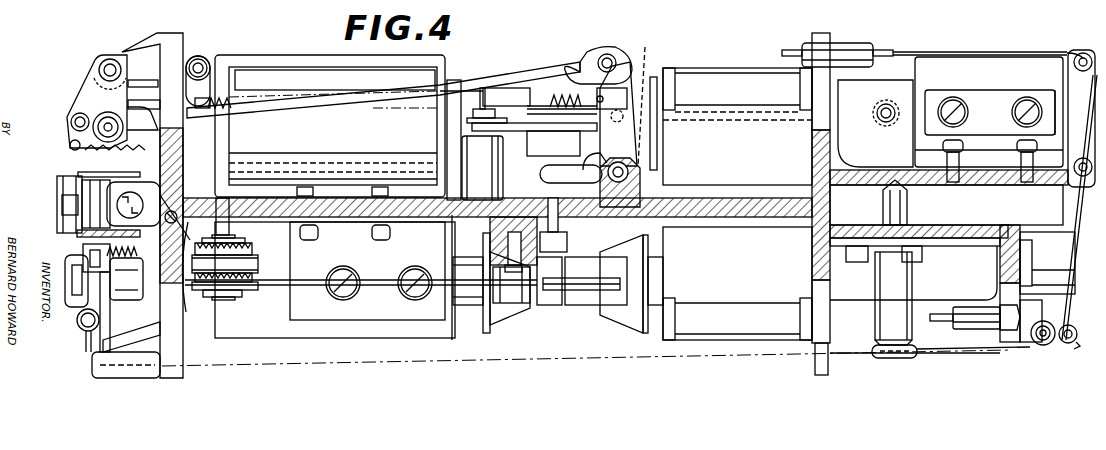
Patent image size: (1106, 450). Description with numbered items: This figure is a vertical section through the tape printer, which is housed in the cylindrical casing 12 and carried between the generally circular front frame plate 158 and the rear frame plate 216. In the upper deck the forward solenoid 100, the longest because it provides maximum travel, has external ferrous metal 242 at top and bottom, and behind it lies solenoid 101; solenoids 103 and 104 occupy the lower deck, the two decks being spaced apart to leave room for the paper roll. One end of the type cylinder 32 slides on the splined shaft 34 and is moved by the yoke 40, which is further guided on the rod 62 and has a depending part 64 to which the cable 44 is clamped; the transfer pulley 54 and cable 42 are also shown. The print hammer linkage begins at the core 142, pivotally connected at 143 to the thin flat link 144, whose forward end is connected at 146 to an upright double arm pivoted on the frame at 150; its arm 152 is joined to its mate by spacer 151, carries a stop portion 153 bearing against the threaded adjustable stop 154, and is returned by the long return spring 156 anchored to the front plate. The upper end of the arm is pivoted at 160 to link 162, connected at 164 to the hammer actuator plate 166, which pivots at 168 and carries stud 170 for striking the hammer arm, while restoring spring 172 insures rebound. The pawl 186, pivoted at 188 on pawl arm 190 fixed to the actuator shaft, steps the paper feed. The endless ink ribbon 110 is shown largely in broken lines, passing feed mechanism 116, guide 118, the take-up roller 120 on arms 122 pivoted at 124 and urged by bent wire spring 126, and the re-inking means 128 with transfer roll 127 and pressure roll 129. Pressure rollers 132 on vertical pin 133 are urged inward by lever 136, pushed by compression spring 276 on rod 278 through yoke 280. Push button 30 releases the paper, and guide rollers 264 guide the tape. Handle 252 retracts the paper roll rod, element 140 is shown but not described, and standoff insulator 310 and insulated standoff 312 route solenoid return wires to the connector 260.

The cylindrical casing 12 is at (630, 108).
The push button 30 is at (62, 178).
The type cylinder 32 is at (64, 200).
The splined shaft 34 is at (171, 205).
The yoke 40 is at (135, 200).
The cable 42 is at (303, 283).
The cable 44 is at (244, 248).
The transfer pulley 54 is at (252, 266).
The rod 62 is at (176, 216).
The depending part 64 is at (187, 305).
The forward solenoid 100 is at (350, 148).
The solenoid 101 is at (746, 156).
The solenoid 103 is at (330, 338).
The solenoid 104 is at (745, 280).
The ink ribbon 110 is at (928, 51).
The feed mechanism 116 is at (108, 348).
The guide 118 is at (116, 374).
The take-up roller 120 is at (1068, 190).
The arms 122 is at (1068, 115).
The pivot 124 is at (1084, 52).
The bent wire spring 126 is at (1060, 110).
The transfer roll 127 is at (1036, 346).
The re-inking means 128 is at (1063, 345).
The pressure roll 129 is at (1075, 346).
The pressure rollers 132 is at (90, 355).
The vertical pin 133 is at (82, 328).
The lever 136 is at (68, 262).
The control box 140 is at (1032, 85).
The core 142 is at (886, 100).
The pivotal connection 143 is at (883, 120).
The thin flat link 144 is at (842, 112).
The pivotal connection 146 is at (658, 96).
The pivot 150 is at (630, 182).
The spacer 151 is at (596, 168).
The arm 152 is at (654, 132).
The stop portion 153 is at (550, 180).
The threaded adjustable stop 154 is at (568, 236).
The return spring 156 is at (228, 98).
The front frame plate 158 is at (172, 38).
The pivot 160 is at (610, 55).
The link 162 is at (458, 80).
The pivotal connection 164 is at (107, 116).
The hammer actuator plate 166 is at (92, 92).
The pivot 168 is at (100, 62).
The stud 170 is at (71, 123).
The restoring spring 172 is at (70, 144).
The pawl 186 is at (205, 140).
The pivot 188 is at (206, 62).
The pawl arm 190 is at (197, 56).
The rear frame plate 216 is at (814, 372).
The ferrous metal 242 is at (348, 62).
The handle 252 is at (872, 358).
The multiprong detachable connector 260 is at (908, 200).
The paper guide rollers 264 is at (70, 222).
The compression spring 276 is at (113, 303).
The rod 278 is at (116, 262).
The yoke 280 is at (74, 240).
The standoff insulator 310 is at (856, 46).
The insulated standoff 312 is at (982, 330).